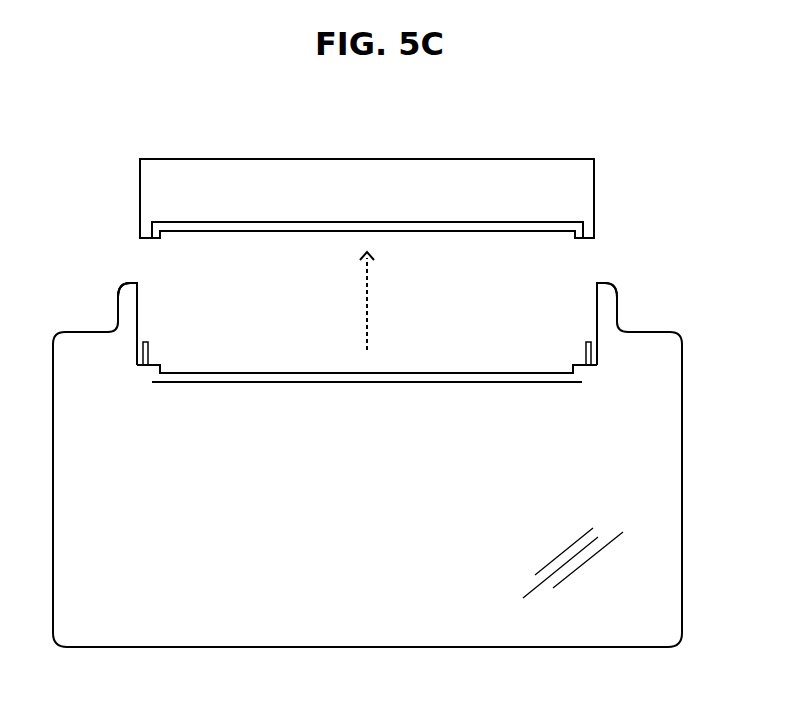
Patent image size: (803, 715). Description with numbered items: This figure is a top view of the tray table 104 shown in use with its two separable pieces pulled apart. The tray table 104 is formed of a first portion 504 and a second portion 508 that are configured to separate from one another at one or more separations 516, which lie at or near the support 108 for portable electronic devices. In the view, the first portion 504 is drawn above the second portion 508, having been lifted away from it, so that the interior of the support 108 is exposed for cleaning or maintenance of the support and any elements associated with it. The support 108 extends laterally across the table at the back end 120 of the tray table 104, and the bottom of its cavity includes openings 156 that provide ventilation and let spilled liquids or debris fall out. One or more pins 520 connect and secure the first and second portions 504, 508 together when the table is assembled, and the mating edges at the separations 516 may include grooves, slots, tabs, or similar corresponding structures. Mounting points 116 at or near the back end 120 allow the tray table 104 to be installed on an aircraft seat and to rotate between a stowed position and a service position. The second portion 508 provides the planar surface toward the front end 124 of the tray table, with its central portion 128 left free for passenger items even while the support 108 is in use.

The tray table 104 is at (640, 175).
The support 108 is at (200, 221).
The mounting points 116 is at (93, 295).
The back end 120 is at (134, 284).
The front end 124 is at (367, 648).
The central portion 128 is at (207, 502).
The openings 156 is at (227, 234).
The first portion 504 is at (375, 159).
The second portion 508 is at (682, 390).
The separations 516 is at (137, 353).
The pins 520 is at (148, 341).